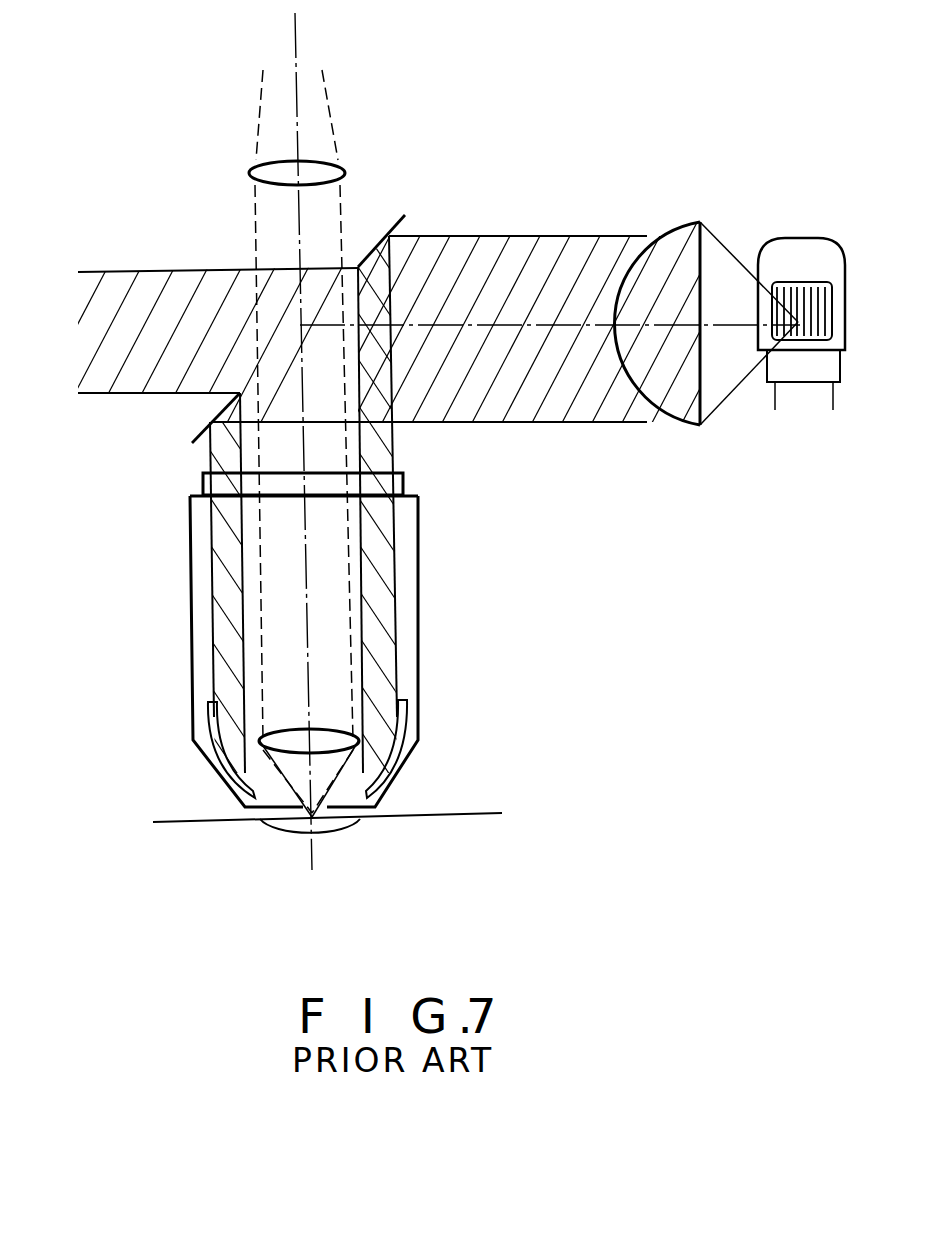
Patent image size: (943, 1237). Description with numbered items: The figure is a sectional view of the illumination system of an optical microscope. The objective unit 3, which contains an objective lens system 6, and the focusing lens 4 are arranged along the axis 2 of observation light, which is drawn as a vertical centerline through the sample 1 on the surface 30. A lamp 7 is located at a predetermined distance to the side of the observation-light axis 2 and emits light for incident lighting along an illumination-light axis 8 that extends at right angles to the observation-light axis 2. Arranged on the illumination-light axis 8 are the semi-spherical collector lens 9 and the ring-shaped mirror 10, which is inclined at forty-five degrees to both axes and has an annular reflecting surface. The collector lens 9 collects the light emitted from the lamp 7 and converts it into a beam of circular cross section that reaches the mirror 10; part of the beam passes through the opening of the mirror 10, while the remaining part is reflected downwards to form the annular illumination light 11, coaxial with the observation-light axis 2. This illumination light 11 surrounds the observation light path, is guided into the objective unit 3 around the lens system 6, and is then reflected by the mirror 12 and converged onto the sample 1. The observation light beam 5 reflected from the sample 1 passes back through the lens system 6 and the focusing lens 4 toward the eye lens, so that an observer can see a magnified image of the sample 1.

The sample 1 is at (335, 825).
The axis of observation light 2 is at (296, 33).
The objective unit 3 is at (418, 622).
The focusing lens 4 is at (281, 163).
The observation light beam 5 is at (253, 240).
The objective lens system 6 is at (287, 737).
The lamp 7 is at (832, 238).
The illumination-light axis 8 is at (500, 297).
The collector lens 9 is at (682, 222).
The mirror 10 is at (388, 232).
The illumination light 11 is at (213, 540).
The mirror 12 is at (407, 752).
The sample surface 30 is at (450, 816).